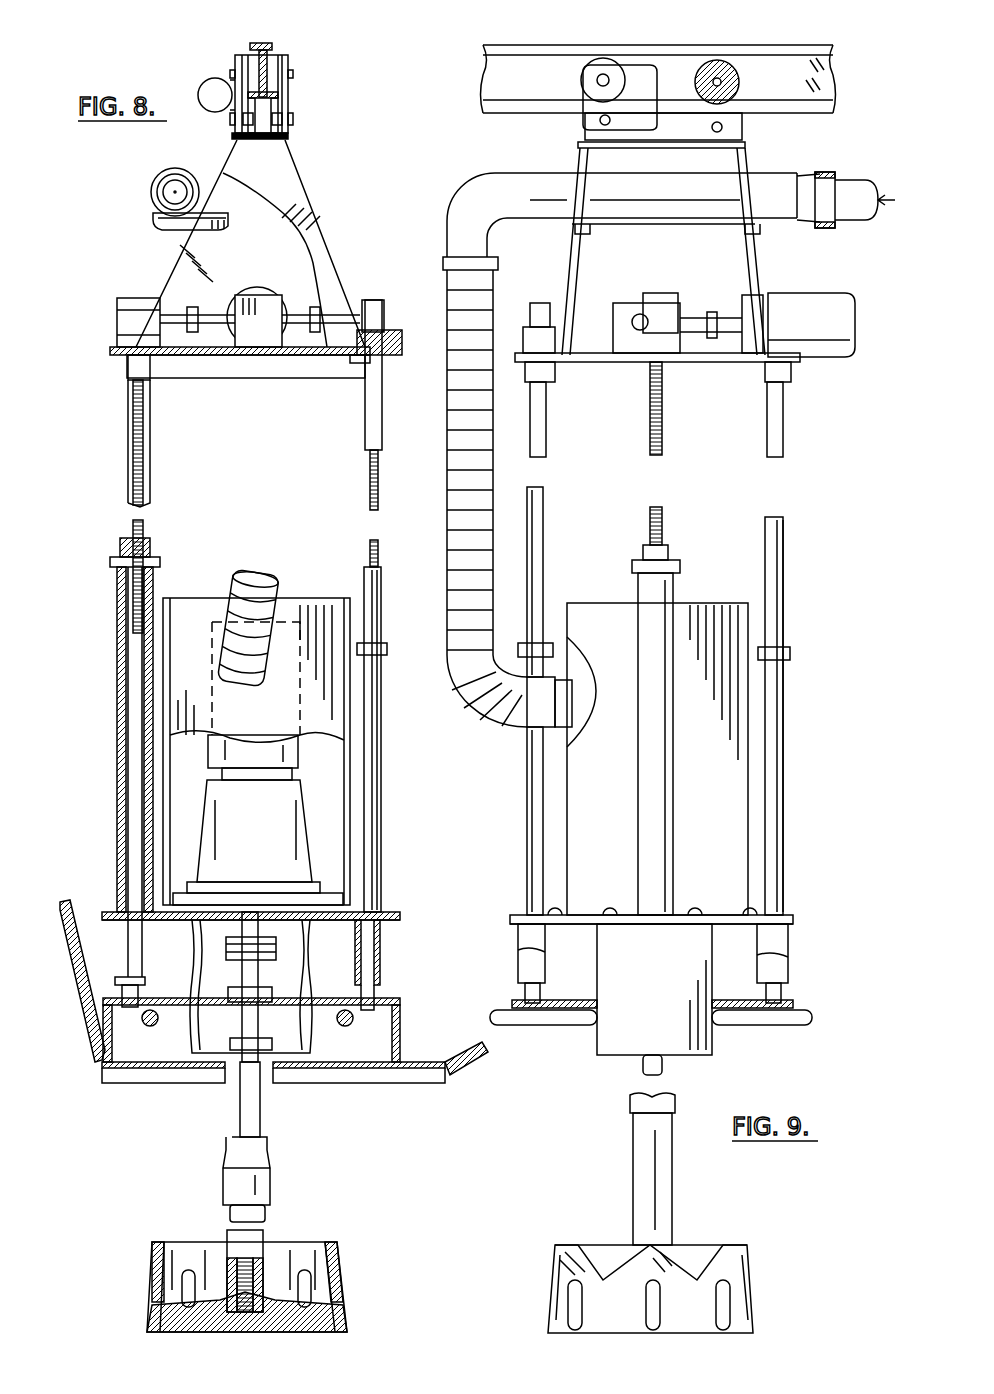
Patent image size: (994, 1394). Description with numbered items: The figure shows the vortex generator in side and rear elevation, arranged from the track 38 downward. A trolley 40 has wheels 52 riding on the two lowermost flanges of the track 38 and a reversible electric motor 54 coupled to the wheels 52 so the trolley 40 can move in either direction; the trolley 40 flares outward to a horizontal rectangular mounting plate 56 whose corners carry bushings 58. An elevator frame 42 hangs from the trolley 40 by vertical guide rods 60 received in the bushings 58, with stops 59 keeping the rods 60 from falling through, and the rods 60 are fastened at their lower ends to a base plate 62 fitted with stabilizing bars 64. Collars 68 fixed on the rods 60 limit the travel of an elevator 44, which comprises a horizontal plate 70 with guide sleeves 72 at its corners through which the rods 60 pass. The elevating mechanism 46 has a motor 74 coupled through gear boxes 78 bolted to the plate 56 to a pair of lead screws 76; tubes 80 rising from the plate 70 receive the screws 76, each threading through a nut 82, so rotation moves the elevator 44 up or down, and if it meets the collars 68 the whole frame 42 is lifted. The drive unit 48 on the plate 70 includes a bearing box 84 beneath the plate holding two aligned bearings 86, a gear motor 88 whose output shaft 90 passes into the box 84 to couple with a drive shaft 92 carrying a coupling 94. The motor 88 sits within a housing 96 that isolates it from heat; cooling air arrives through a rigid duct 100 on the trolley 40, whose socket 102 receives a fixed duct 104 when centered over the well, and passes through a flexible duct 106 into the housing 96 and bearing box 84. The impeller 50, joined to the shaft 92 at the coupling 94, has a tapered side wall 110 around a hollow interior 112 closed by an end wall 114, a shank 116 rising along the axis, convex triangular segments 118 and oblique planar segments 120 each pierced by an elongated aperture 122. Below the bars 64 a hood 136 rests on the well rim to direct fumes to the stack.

In FIG. 8, the track 38 is at (272, 48).
In FIG. 9, the track 38 is at (792, 52).
In FIG. 8, the trolley 40 is at (320, 188).
In FIG. 9, the trolley 40 is at (778, 255).
In FIG. 8, the elevator frame 42 is at (392, 736).
In FIG. 9, the elevator frame 42 is at (803, 746).
In FIG. 8, the elevator 44 is at (408, 910).
In FIG. 9, the elevator 44 is at (803, 911).
In FIG. 8, the elevating mechanism 46 is at (310, 300).
In FIG. 9, the elevating mechanism 46 is at (632, 296).
In FIG. 8, the drive unit 48 is at (187, 834).
In FIG. 9, the drive unit 48 is at (720, 958).
In FIG. 8, the impeller 50 is at (140, 1264).
In FIG. 9, the impeller 50 is at (723, 1233).
In FIG. 8, the wheels 52 is at (252, 56).
In FIG. 9, the wheels 52 is at (600, 57).
In FIG. 8, the reversible electric motor 54 is at (210, 85).
In FIG. 8, the mounting plate 56 is at (215, 360).
In FIG. 9, the mounting plate 56 is at (710, 363).
In FIG. 8, the bushings 58 is at (355, 365).
In FIG. 9, the bushings 58 is at (552, 385).
In FIG. 8, the stops 59 is at (384, 304).
In FIG. 9, the stops 59 is at (525, 345).
In FIG. 8, the guide rods 60 is at (380, 440).
In FIG. 9, the guide rods 60 is at (547, 492).
In FIG. 8, the base plate 62 is at (372, 1065).
In FIG. 9, the base plate 62 is at (550, 1025).
In FIG. 8, the stabilizing bars 64 is at (400, 1012).
In FIG. 9, the stabilizing bars 64 is at (790, 1020).
In FIG. 8, the collars 68 is at (388, 645).
In FIG. 9, the collars 68 is at (548, 643).
In FIG. 8, the horizontal plate 70 is at (400, 916).
In FIG. 9, the horizontal plate 70 is at (795, 916).
In FIG. 8, the guide sleeves 72 is at (382, 958).
In FIG. 9, the guide sleeves 72 is at (518, 970).
In FIG. 8, the motor 74 is at (255, 292).
In FIG. 9, the motor 74 is at (835, 350).
In FIG. 8, the lead screws 76 is at (133, 525).
In FIG. 9, the lead screws 76 is at (652, 510).
In FIG. 8, the gear boxes 78 is at (117, 315).
In FIG. 9, the gear boxes 78 is at (665, 293).
In FIG. 8, the tubes 80 is at (117, 680).
In FIG. 9, the tubes 80 is at (670, 740).
In FIG. 8, the nut 82 is at (110, 545).
In FIG. 9, the nut 82 is at (680, 560).
In FIG. 8, the bearing box 84 is at (190, 1035).
In FIG. 9, the bearing box 84 is at (712, 1040).
In FIG. 8, the bearings 86 is at (260, 1062).
In FIG. 8, the gear motor 88 is at (208, 755).
In FIG. 8, the output shaft 90 is at (250, 912).
In FIG. 8, the drive shaft 92 is at (240, 1107).
In FIG. 9, the drive shaft 92 is at (643, 1070).
In FIG. 8, the coupling 94 is at (230, 1180).
In FIG. 9, the coupling 94 is at (630, 1105).
In FIG. 8, the housing 96 is at (195, 600).
In FIG. 9, the housing 96 is at (700, 603).
In FIG. 8, the rigid duct 100 is at (152, 197).
In FIG. 9, the rigid duct 100 is at (515, 178).
In FIG. 8, the socket 102 is at (165, 170).
In FIG. 9, the socket 102 is at (822, 172).
In FIG. 9, the fixed duct 104 is at (858, 222).
In FIG. 8, the flexible duct 106 is at (244, 572).
In FIG. 9, the flexible duct 106 is at (447, 490).
In FIG. 8, the side wall 110 is at (338, 1262).
In FIG. 9, the side wall 110 is at (752, 1290).
In FIG. 8, the hollow interior 112 is at (280, 1252).
In FIG. 8, the end wall 114 is at (280, 1335).
In FIG. 8, the shank 116 is at (230, 1232).
In FIG. 9, the shank 116 is at (660, 1172).
In FIG. 9, the triangular segments 118 is at (578, 1245).
In FIG. 8, the planar segments 120 is at (340, 1282).
In FIG. 9, the planar segments 120 is at (590, 1335).
In FIG. 8, the aperture 122 is at (185, 1295).
In FIG. 9, the aperture 122 is at (567, 1300).
In FIG. 8, the hood 136 is at (445, 1062).